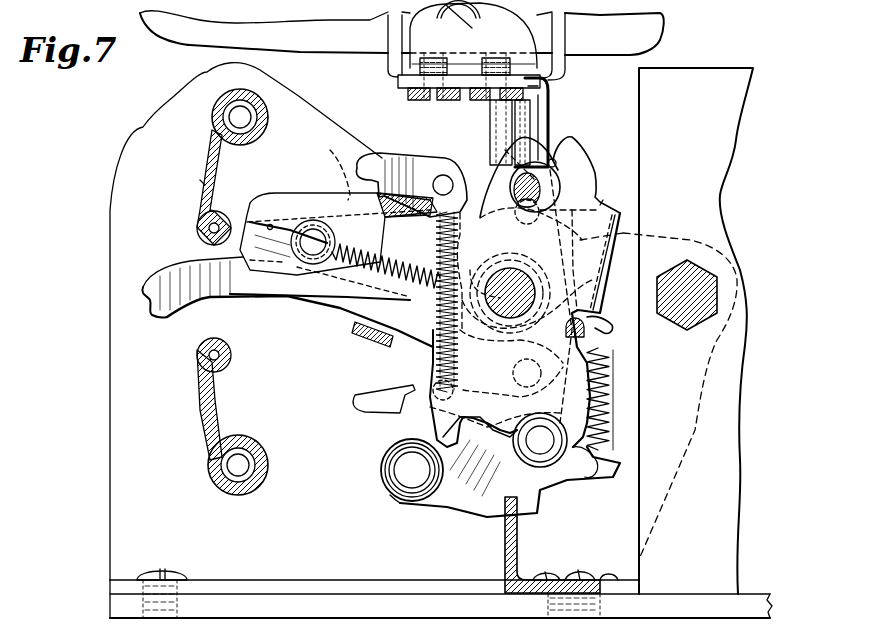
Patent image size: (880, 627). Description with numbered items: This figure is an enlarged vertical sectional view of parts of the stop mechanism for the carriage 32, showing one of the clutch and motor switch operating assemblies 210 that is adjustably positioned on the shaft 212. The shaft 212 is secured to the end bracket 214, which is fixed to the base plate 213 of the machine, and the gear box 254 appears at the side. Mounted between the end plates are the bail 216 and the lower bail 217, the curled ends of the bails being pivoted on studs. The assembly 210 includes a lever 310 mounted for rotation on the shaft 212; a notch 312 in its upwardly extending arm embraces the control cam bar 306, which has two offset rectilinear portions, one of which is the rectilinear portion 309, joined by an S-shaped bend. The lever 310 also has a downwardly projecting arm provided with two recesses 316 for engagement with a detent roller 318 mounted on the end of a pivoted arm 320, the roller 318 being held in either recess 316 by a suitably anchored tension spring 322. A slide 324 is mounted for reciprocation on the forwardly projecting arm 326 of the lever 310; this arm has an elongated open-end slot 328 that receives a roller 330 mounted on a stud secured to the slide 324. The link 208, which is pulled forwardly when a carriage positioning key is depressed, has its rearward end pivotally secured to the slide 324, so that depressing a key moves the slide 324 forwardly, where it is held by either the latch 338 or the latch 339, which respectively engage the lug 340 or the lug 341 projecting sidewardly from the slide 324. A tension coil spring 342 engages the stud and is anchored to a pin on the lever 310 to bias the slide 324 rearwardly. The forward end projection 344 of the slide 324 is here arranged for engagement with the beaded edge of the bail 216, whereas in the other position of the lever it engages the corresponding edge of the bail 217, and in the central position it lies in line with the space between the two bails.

The carriage 32 is at (670, 22).
The gear box 254 is at (710, 68).
The end bracket 214 is at (192, 86).
The bail 216 is at (207, 152).
The forward end projection 344 is at (202, 192).
The lower bail 217 is at (203, 418).
The link 208 is at (192, 262).
The elongated open-end slot 328 is at (275, 225).
The roller 330 is at (302, 264).
The tension coil spring 342 is at (402, 262).
The slide 324 is at (348, 198).
The forwardly projecting arm 326 is at (336, 212).
The lug 341 is at (368, 328).
The latch 338 is at (390, 156).
The lug 340 is at (430, 215).
The latch 339 is at (356, 408).
The lever 310 is at (612, 190).
The clutch and motor switch operating assembly 210 is at (612, 158).
The notch 312 is at (532, 140).
The shaft 212 is at (530, 295).
The tension spring 322 is at (612, 385).
The cam bar 306 is at (572, 90).
The rectilinear portion 309 is at (545, 121).
The recess 316 is at (505, 433).
The detent roller 318 is at (552, 475).
The pivoted arm 320 is at (600, 462).
The base plate 213 is at (120, 600).